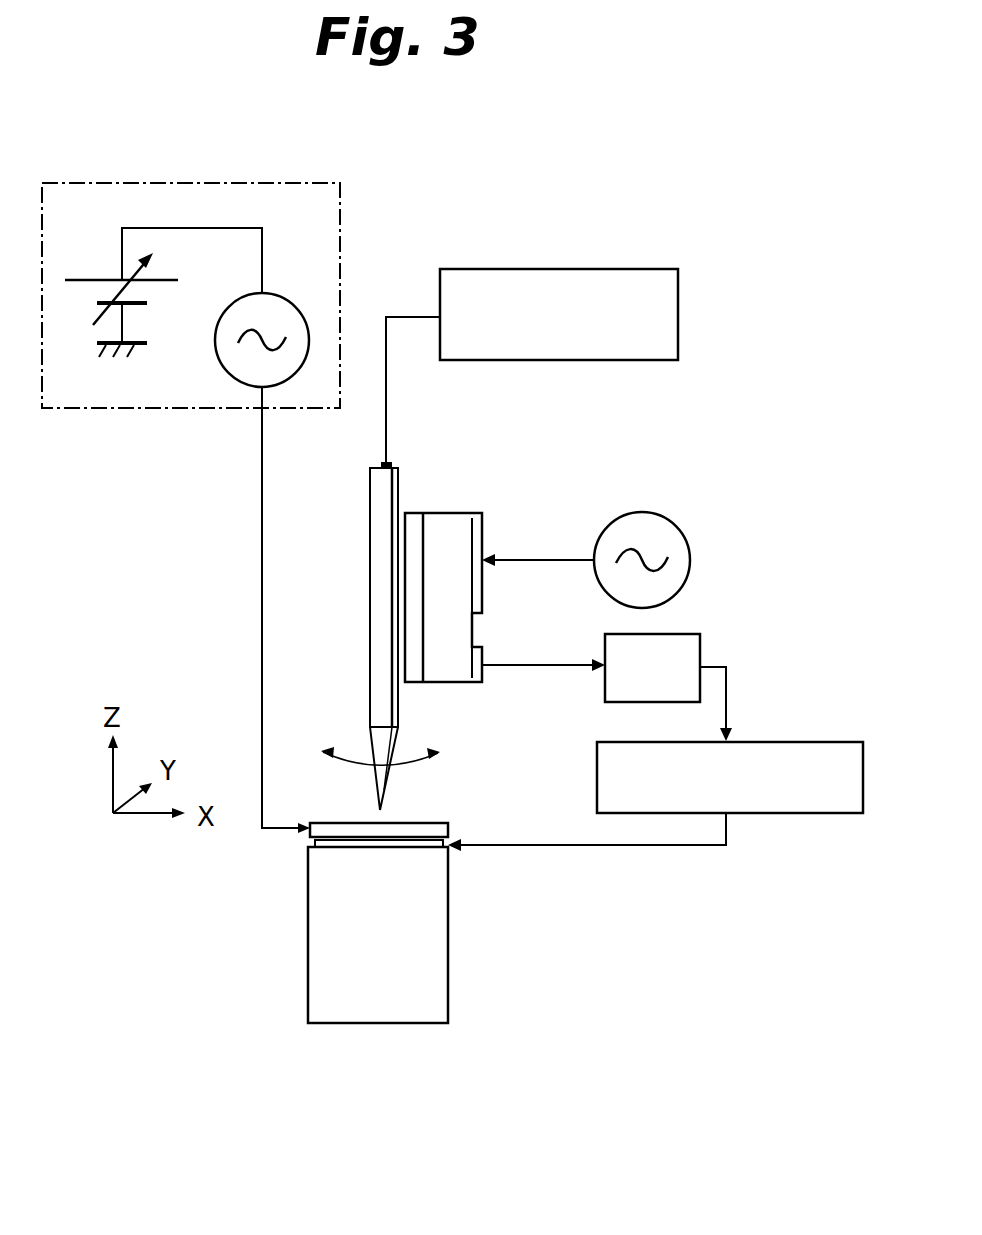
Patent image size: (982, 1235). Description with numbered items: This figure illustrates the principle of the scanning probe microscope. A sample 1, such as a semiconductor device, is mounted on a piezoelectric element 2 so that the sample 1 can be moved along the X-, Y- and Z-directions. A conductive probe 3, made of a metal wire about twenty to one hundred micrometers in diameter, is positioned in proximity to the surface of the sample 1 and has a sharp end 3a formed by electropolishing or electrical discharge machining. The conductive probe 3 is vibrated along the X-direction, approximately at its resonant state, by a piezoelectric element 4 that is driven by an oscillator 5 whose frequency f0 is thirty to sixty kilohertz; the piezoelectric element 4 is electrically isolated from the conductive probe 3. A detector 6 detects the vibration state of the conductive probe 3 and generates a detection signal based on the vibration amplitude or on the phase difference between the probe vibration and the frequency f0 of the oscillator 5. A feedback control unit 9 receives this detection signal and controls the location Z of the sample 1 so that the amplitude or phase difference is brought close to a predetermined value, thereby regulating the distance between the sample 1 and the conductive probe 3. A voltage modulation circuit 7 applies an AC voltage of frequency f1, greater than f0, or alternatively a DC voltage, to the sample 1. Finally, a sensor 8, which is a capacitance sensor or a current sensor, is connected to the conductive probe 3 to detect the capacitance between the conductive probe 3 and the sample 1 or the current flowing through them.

The sample 1 is at (425, 822).
The piezoelectric element 2 is at (448, 883).
The conductive probe 3 is at (370, 700).
The sharp end 3a is at (395, 744).
The piezoelectric element 4 is at (448, 513).
The oscillator 5 is at (680, 530).
The detector 6 is at (700, 642).
The voltage modulation circuit 7 is at (118, 410).
The sensor 8 is at (530, 269).
The feedback control unit 9 is at (772, 742).